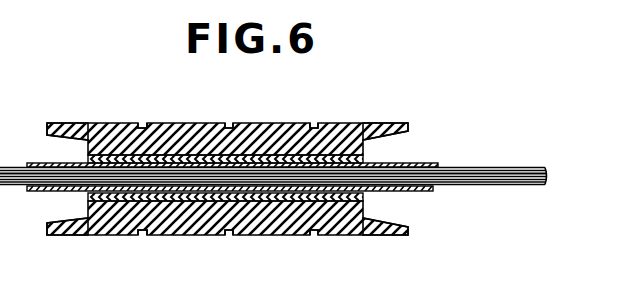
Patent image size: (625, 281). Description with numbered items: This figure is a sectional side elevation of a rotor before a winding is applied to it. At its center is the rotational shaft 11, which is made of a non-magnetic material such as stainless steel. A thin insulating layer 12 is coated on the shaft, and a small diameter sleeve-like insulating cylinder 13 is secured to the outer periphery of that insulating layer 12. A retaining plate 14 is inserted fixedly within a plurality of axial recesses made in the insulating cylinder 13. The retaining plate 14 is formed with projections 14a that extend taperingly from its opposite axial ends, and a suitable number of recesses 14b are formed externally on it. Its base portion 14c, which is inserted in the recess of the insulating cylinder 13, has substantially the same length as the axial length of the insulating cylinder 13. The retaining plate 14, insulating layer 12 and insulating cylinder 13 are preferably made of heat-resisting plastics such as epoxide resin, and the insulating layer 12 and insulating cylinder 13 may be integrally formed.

The rotational shaft 11 is at (497, 166).
The insulating layer 12 is at (427, 164).
The insulating cylinder 13 is at (363, 196).
The retaining plate 14 is at (349, 137).
The projections 14a is at (81, 122).
The recesses 14b is at (142, 125).
The base portion 14c is at (366, 146).